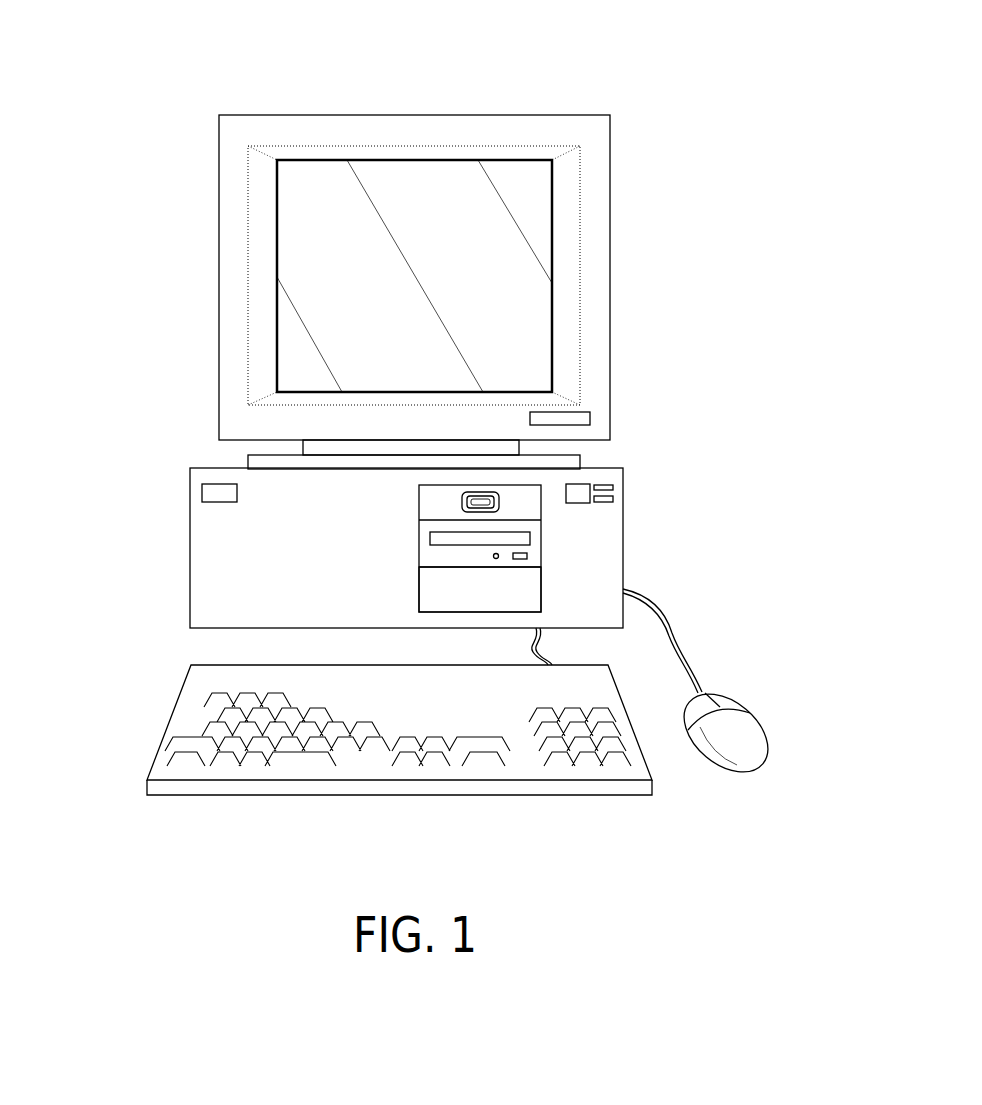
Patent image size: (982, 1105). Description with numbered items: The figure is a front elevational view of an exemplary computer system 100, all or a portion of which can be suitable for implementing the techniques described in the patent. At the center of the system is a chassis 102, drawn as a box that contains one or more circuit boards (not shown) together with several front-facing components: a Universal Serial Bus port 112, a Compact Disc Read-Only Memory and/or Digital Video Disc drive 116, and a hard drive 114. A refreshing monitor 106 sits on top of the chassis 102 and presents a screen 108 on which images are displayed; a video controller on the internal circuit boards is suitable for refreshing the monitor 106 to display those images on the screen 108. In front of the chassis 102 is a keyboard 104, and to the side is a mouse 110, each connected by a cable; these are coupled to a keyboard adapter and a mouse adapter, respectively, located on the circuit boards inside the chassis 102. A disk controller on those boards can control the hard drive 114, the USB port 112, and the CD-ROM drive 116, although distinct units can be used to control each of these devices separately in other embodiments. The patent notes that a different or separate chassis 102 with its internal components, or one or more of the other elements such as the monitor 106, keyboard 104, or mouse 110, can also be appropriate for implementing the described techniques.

The computer system 100 is at (604, 85).
The chassis 102 is at (190, 548).
The keyboard 104 is at (172, 720).
The refreshing monitor 106 is at (297, 115).
The screen 108 is at (328, 281).
The mouse 110 is at (745, 723).
The Universal Serial Bus (USB) port 112 is at (499, 498).
The hard drive 114 is at (530, 586).
The CD-ROM and/or DVD drive 116 is at (541, 546).